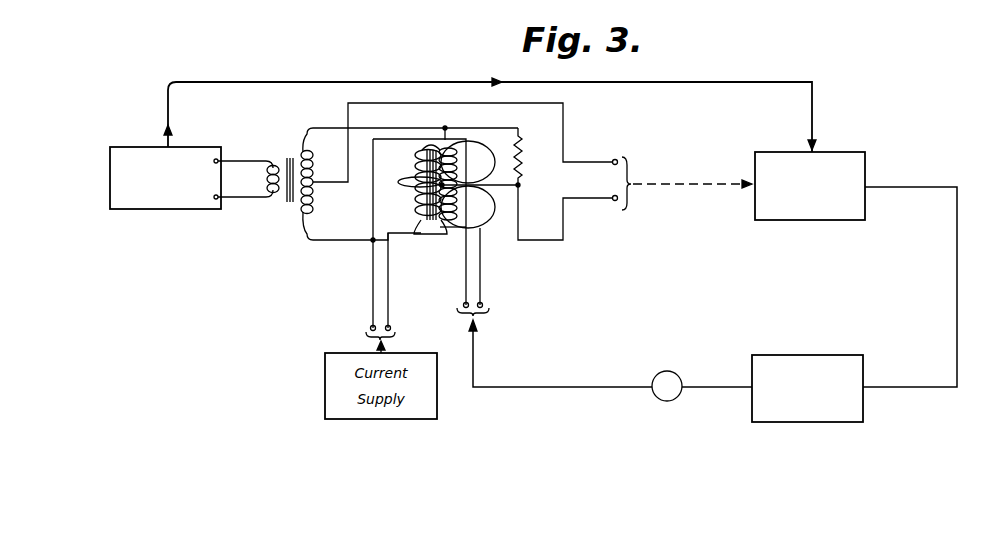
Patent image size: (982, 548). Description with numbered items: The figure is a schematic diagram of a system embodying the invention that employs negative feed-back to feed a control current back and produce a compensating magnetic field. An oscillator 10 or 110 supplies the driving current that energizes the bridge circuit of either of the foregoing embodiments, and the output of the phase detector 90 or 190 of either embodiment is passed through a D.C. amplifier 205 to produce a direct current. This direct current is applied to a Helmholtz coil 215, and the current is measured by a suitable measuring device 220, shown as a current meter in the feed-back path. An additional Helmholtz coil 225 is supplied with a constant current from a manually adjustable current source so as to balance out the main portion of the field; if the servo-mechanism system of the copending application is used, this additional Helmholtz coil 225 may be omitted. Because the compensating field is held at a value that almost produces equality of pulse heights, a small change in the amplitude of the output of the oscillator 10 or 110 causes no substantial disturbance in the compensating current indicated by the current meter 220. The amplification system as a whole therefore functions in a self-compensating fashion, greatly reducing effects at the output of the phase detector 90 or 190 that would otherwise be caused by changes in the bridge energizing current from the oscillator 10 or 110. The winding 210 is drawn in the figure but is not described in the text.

The oscillator 10 is at (165, 196).
The oscillator 110 is at (210, 210).
The excitation winding 210 is at (408, 170).
The Helmholtz coil 215 is at (418, 232).
The additional Helmholtz coil 225 is at (466, 140).
The measuring device 220 is at (669, 397).
The D.C. amplifier 205 is at (828, 422).
The phase detector 90 is at (810, 201).
The phase detector 190 is at (817, 220).